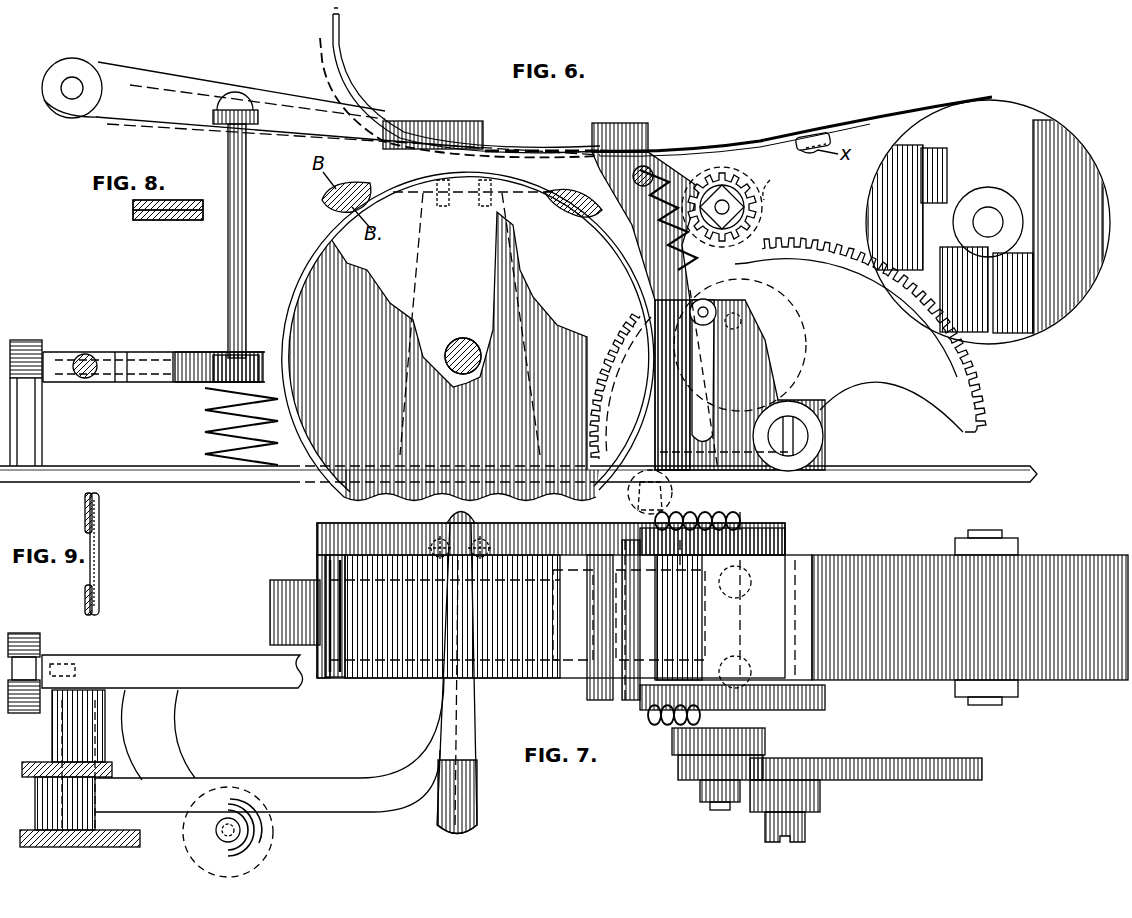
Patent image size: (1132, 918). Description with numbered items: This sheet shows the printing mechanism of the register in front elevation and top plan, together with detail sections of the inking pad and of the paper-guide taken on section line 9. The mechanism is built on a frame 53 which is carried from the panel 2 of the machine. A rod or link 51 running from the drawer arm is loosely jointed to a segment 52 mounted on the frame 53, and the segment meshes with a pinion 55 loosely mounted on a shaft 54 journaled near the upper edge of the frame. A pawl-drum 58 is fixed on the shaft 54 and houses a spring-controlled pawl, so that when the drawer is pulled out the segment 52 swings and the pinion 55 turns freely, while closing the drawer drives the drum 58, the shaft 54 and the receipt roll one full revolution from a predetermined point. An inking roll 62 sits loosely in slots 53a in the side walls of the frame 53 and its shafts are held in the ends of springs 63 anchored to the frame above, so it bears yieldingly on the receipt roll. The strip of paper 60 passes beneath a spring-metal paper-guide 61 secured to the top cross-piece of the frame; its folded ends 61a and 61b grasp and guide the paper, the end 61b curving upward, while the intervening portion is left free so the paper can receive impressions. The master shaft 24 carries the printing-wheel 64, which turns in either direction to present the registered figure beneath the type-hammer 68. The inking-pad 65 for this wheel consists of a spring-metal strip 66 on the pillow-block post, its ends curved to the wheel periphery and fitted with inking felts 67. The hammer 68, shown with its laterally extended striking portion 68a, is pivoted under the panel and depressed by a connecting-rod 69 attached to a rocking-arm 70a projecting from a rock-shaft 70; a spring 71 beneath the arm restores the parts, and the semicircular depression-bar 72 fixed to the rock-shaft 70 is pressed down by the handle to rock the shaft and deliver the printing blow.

In FIG. 6, the panel 2 is at (484, 141).
In FIG. 6, the section line 9- 9 is at (330, 40).
In FIG. 6, the master shaft 24 is at (466, 348).
In FIG. 6, the rod or link 51 is at (700, 426).
In FIG. 6, the segment 52 is at (860, 335).
In FIG. 7, the segment 52 is at (886, 782).
In FIG. 6, the frame 53 is at (740, 385).
In FIG. 7, the frame 53 is at (600, 652).
In FIG. 6, the slots 53a is at (742, 318).
In FIG. 6, the shaft 54 is at (762, 207).
In FIG. 7, the shaft 54 is at (722, 806).
In FIG. 6, the pinion 55 is at (772, 188).
In FIG. 7, the pinion 55 is at (678, 770).
In FIG. 6, the pawl-drum 58 is at (725, 175).
In FIG. 7, the pawl-drum 58 is at (672, 740).
In FIG. 6, the strip of paper 60 is at (848, 134).
In FIG. 9, the strip of paper 60 is at (88, 562).
In FIG. 7, the strip of paper 60 is at (886, 566).
In FIG. 6, the paper-guide 61 is at (655, 146).
In FIG. 9, the paper-guide 61 is at (100, 564).
In FIG. 7, the paper-guide 61 is at (733, 621).
In FIG. 6, the folded end of paper-guide 61a is at (805, 138).
In FIG. 6, the upwardly-curved end of paper-guide 61b is at (345, 58).
In FIG. 7, the upwardly-curved end of paper-guide 61b is at (350, 678).
In FIG. 6, the inking roll 62 is at (622, 357).
In FIG. 6, the springs 63 is at (642, 205).
In FIG. 7, the springs 63 is at (703, 518).
In FIG. 6, the printing-wheel 64 is at (468, 336).
In FIG. 7, the printing-wheel 64 is at (270, 612).
In FIG. 6, the inking-pad 65 is at (320, 200).
In FIG. 8, the inking-pad 65 is at (163, 218).
In FIG. 6, the spring-metal strip 66 is at (358, 205).
In FIG. 8, the spring-metal strip 66 is at (205, 214).
In FIG. 6, the inking felts 67 is at (334, 210).
In FIG. 8, the inking felts 67 is at (156, 209).
In FIG. 6, the type-hammer 68 is at (168, 96).
In FIG. 7, the type-hammer 68 is at (280, 790).
In FIG. 7, the lever rod 68a is at (476, 621).
In FIG. 6, the connecting-rod 69 is at (228, 272).
In FIG. 7, the connecting-rod 69 is at (220, 832).
In FIG. 6, the rock-shaft 70 is at (138, 382).
In FIG. 7, the rock-shaft 70 is at (165, 660).
In FIG. 6, the rocking-arm 70a is at (186, 364).
In FIG. 7, the rocking-arm 70a is at (180, 736).
In FIG. 6, the spring 71 is at (200, 442).
In FIG. 7, the spring 71 is at (282, 838).
In FIG. 6, the depression-rod or bar 72 is at (90, 355).
In FIG. 7, the depression-rod or bar 72 is at (90, 848).